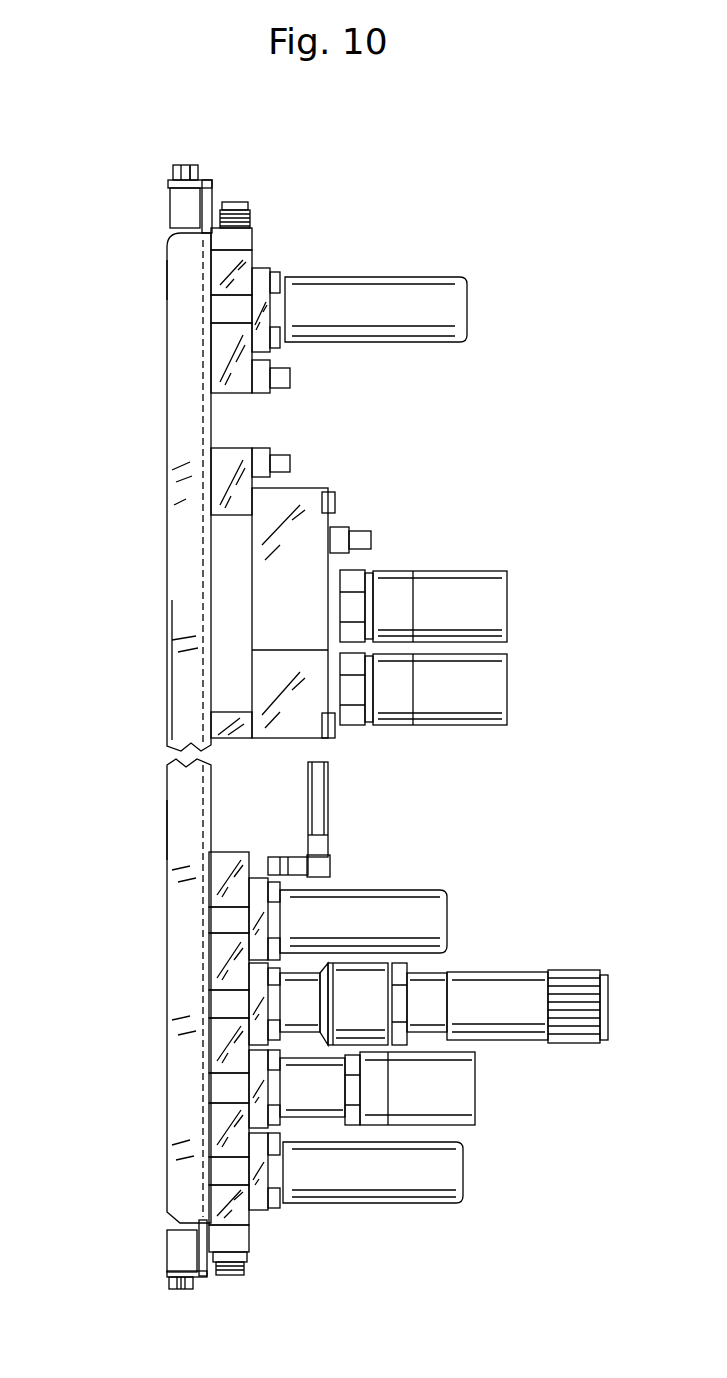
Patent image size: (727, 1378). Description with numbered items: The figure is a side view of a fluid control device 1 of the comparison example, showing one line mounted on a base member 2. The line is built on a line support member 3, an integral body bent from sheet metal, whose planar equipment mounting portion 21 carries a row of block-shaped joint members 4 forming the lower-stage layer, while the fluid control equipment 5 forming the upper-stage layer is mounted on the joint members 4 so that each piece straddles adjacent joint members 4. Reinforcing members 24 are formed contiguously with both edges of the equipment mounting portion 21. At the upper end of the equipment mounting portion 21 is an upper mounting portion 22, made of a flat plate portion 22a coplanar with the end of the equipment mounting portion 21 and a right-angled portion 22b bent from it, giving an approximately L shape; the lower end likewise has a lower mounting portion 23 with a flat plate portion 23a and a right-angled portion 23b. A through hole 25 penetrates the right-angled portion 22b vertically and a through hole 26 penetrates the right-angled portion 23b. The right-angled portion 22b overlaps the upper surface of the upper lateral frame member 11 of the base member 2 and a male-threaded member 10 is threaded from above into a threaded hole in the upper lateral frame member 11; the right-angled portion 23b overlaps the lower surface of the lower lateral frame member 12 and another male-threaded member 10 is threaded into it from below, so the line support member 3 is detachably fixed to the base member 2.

The fluid control device 1 is at (556, 722).
The base member 2 is at (182, 236).
The line support member 3 is at (182, 828).
The joint member 4 is at (244, 352).
The fluid control equipment 5 is at (462, 303).
The male-threaded member 10 is at (186, 174).
The upper lateral frame member 11 is at (178, 210).
The lower lateral frame member 12 is at (172, 1246).
The equipment mounting portion 21 is at (196, 656).
The upper mounting portion 22 is at (218, 186).
The flat plate portion 22a is at (222, 198).
The right-angled portion 22b is at (172, 184).
The lower mounting portion 23 is at (206, 1276).
The flat plate portion 23a is at (250, 1240).
The right-angled portion 23b is at (168, 1270).
The reinforcing member 24 is at (178, 690).
The through hole 25 is at (196, 182).
The through hole 26 is at (180, 1288).